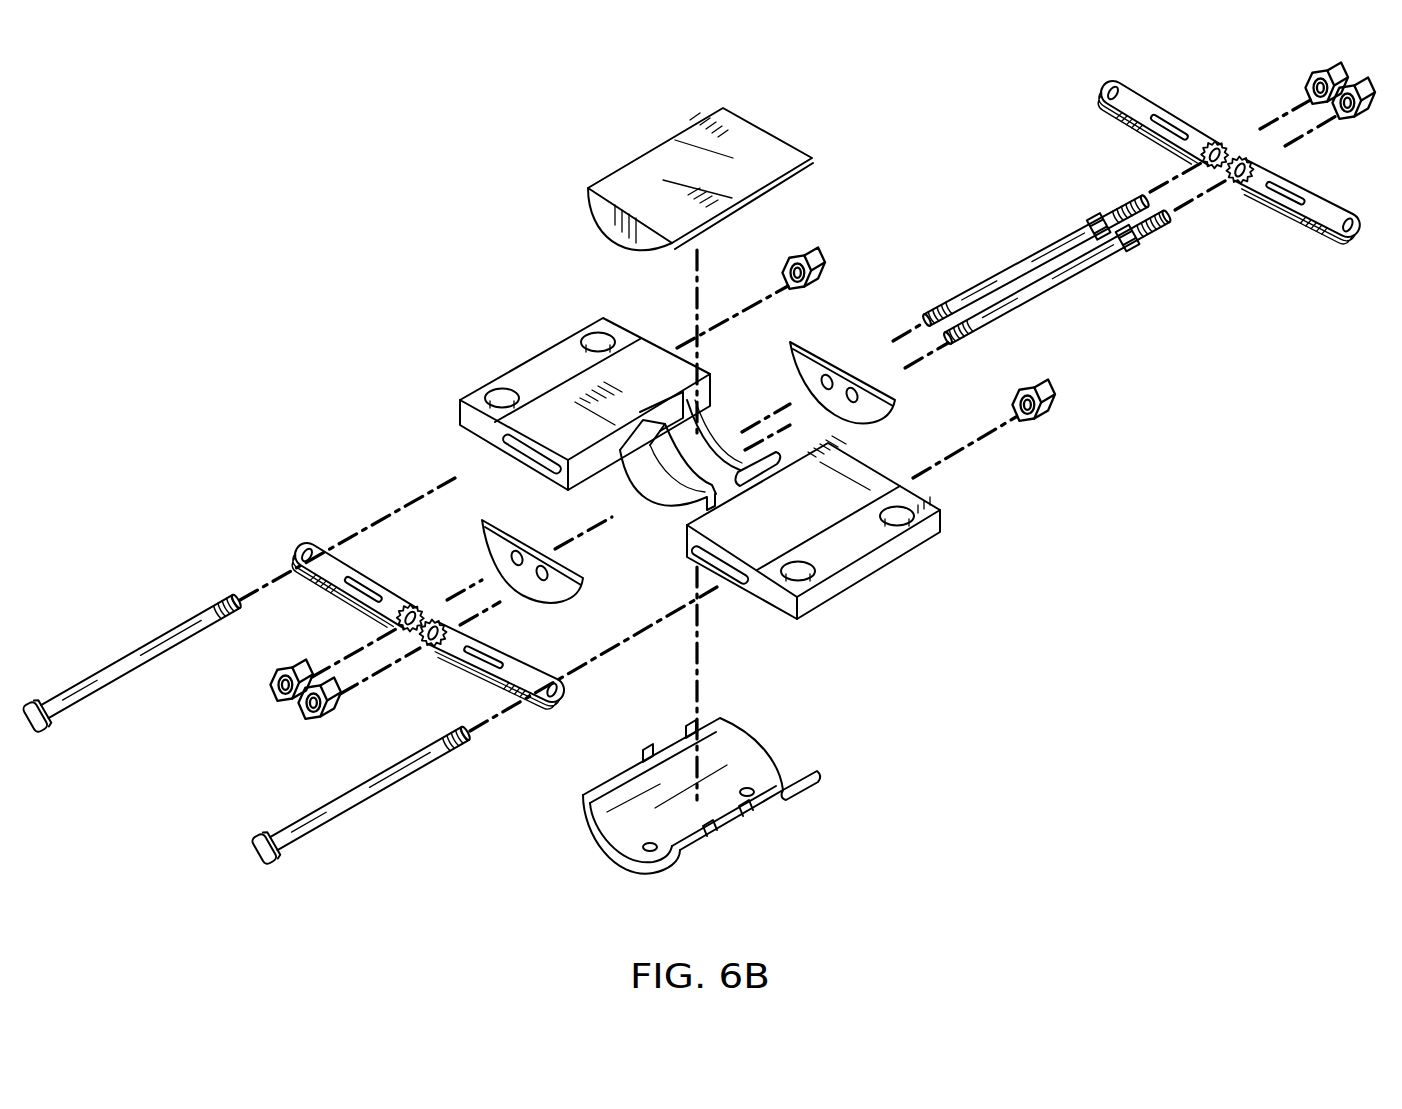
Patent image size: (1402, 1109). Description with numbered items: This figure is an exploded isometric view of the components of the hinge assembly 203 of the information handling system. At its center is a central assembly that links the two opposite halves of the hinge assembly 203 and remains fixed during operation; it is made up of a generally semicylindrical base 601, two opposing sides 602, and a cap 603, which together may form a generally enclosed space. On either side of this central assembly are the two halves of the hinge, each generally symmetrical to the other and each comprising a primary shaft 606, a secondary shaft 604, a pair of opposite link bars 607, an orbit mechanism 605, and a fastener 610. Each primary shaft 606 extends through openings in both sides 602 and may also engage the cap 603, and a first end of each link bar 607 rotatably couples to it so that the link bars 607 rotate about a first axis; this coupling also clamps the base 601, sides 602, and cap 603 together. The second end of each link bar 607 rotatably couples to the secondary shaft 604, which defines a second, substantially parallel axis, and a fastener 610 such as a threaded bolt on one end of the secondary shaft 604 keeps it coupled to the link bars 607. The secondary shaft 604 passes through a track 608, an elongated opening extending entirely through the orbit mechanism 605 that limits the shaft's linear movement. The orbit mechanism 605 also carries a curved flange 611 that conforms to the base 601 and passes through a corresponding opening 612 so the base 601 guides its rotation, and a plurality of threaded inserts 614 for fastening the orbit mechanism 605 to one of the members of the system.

The hinge assembly 203 is at (358, 207).
The base 601 is at (612, 858).
The sides 602 is at (850, 336).
The cap 603 is at (653, 150).
The secondary shaft 604 is at (128, 652).
The orbit mechanism 605 is at (548, 347).
The primary shaft 606 is at (1010, 268).
The link bars 607 is at (1178, 112).
The track 608 is at (538, 461).
The fastener 610 is at (815, 262).
The flange 611 is at (662, 514).
The opening 612 is at (638, 772).
The threaded inserts 614 is at (600, 335).